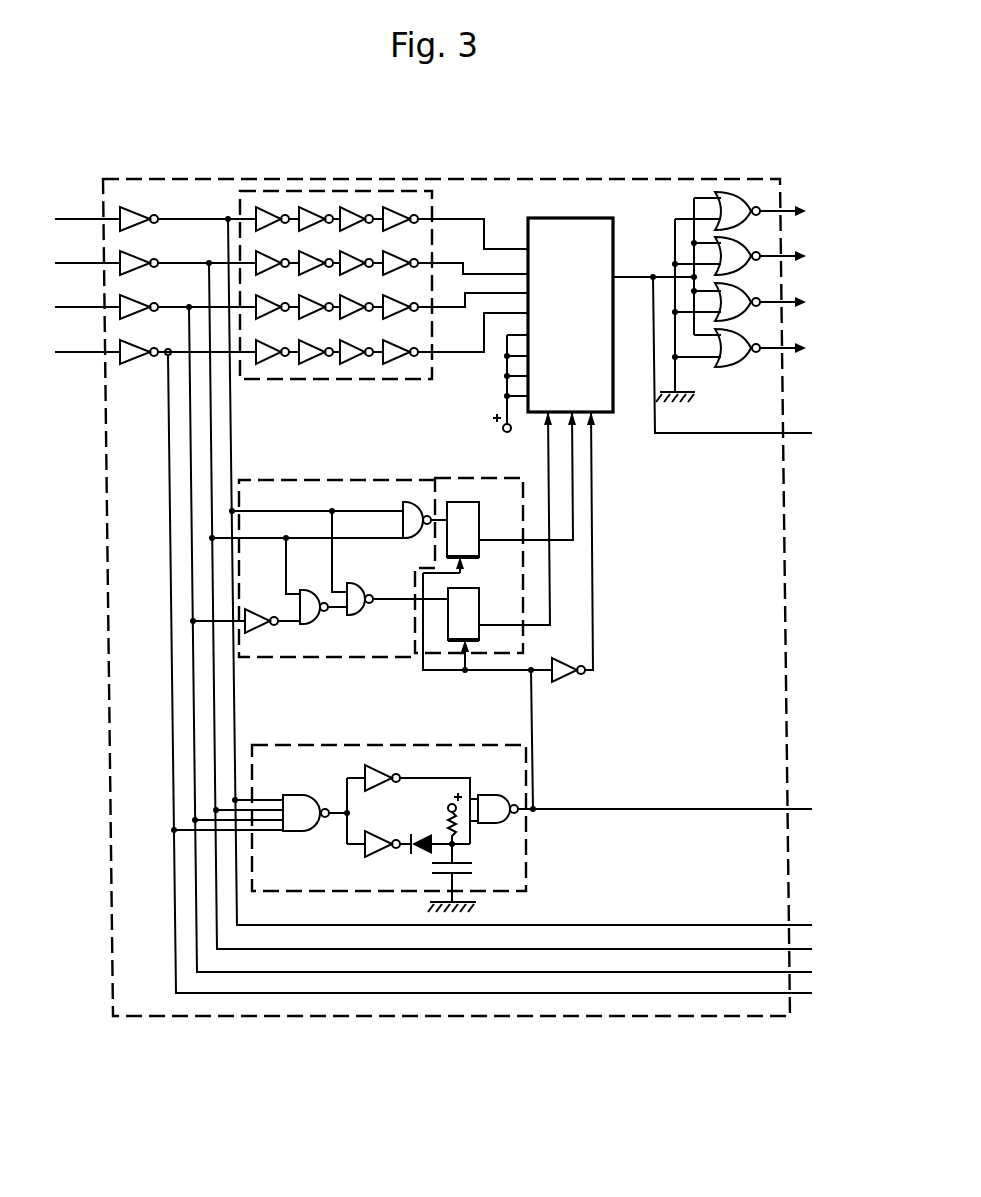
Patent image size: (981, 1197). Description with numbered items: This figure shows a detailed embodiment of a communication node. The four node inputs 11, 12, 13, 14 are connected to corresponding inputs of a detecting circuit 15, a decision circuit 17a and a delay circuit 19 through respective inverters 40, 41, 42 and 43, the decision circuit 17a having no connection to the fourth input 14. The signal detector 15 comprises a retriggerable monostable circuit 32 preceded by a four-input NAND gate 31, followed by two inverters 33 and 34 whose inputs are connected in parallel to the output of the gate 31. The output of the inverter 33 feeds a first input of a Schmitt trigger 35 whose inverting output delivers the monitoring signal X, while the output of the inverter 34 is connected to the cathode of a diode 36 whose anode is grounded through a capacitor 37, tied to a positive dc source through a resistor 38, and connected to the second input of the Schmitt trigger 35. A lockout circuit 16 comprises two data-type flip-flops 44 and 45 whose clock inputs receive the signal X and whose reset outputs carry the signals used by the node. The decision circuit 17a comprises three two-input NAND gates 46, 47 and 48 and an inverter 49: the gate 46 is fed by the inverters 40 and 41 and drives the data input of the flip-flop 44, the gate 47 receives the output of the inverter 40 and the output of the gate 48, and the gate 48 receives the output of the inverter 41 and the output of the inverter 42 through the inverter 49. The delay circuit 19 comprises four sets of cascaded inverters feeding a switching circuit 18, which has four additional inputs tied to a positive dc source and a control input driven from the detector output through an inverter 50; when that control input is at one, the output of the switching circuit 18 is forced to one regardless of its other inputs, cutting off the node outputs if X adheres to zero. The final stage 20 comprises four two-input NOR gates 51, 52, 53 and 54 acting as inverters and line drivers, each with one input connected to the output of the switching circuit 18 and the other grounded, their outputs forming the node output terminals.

The input 11 is at (87, 204).
The input 12 is at (87, 248).
The input 13 is at (87, 292).
The input 14 is at (87, 337).
The detecting circuit 15 is at (491, 791).
The lockout circuit 16 is at (496, 559).
The decision circuit 17a is at (319, 567).
The switching circuit 18 is at (548, 228).
The delay circuit 19 is at (340, 190).
The final stage 20 is at (727, 287).
The NAND gate 31 is at (296, 797).
The retriggerable monostable circuit 32 is at (427, 809).
The inverter 33 is at (378, 765).
The inverter 34 is at (368, 855).
The Schmitt trigger 35 is at (494, 797).
The diode 36 is at (420, 838).
The capacitor 37 is at (472, 865).
The resistor 38 is at (446, 822).
The inverter 40 is at (133, 217).
The inverter 41 is at (133, 261).
The inverter 42 is at (138, 305).
The inverter 43 is at (138, 349).
The data-type flip-flop 44 is at (467, 513).
The data-type flip-flop 45 is at (440, 650).
The NAND gate 46 is at (415, 538).
The NAND gate 47 is at (358, 590).
The NAND gate 48 is at (308, 592).
The inverter 49 is at (260, 632).
The inverter 50 is at (570, 677).
The NOR gate 51 is at (731, 200).
The NOR gate 52 is at (746, 248).
The NOR gate 53 is at (748, 293).
The NOR gate 54 is at (740, 364).